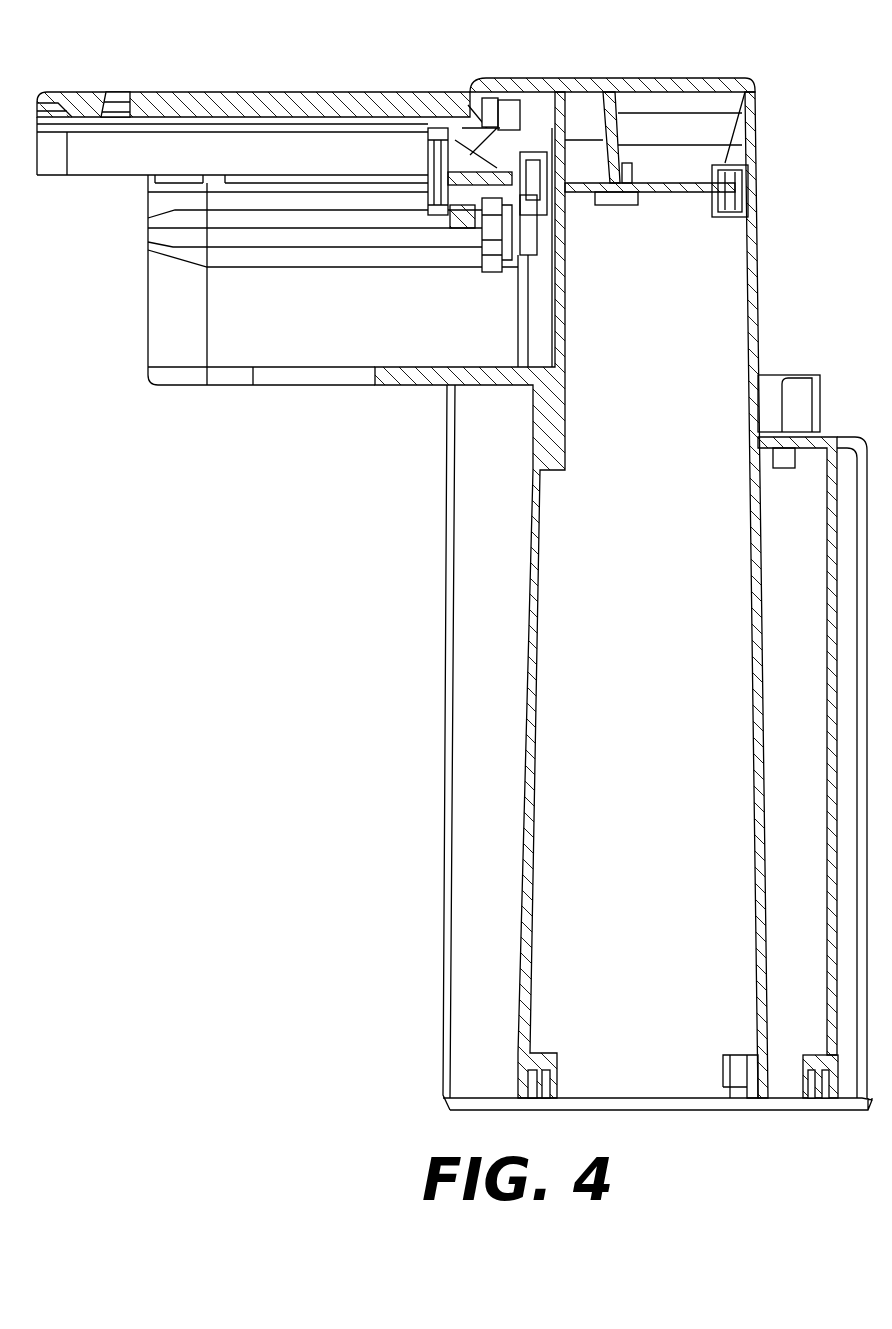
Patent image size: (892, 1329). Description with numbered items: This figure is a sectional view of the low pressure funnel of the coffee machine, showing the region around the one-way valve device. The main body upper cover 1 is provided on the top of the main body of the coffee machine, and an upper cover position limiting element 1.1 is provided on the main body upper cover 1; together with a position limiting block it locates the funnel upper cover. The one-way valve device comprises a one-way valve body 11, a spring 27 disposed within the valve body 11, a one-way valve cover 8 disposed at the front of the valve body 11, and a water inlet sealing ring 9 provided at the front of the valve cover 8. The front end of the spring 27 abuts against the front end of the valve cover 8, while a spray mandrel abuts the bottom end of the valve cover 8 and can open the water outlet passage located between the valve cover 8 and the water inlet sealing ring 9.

The main body upper cover 1 is at (187, 91).
The upper cover position limiting element 1.1 is at (104, 91).
The one-way valve cover 8 is at (487, 134).
The water inlet sealing ring 9 is at (462, 132).
The one-way valve body 11 is at (530, 163).
The spring 27 is at (572, 172).